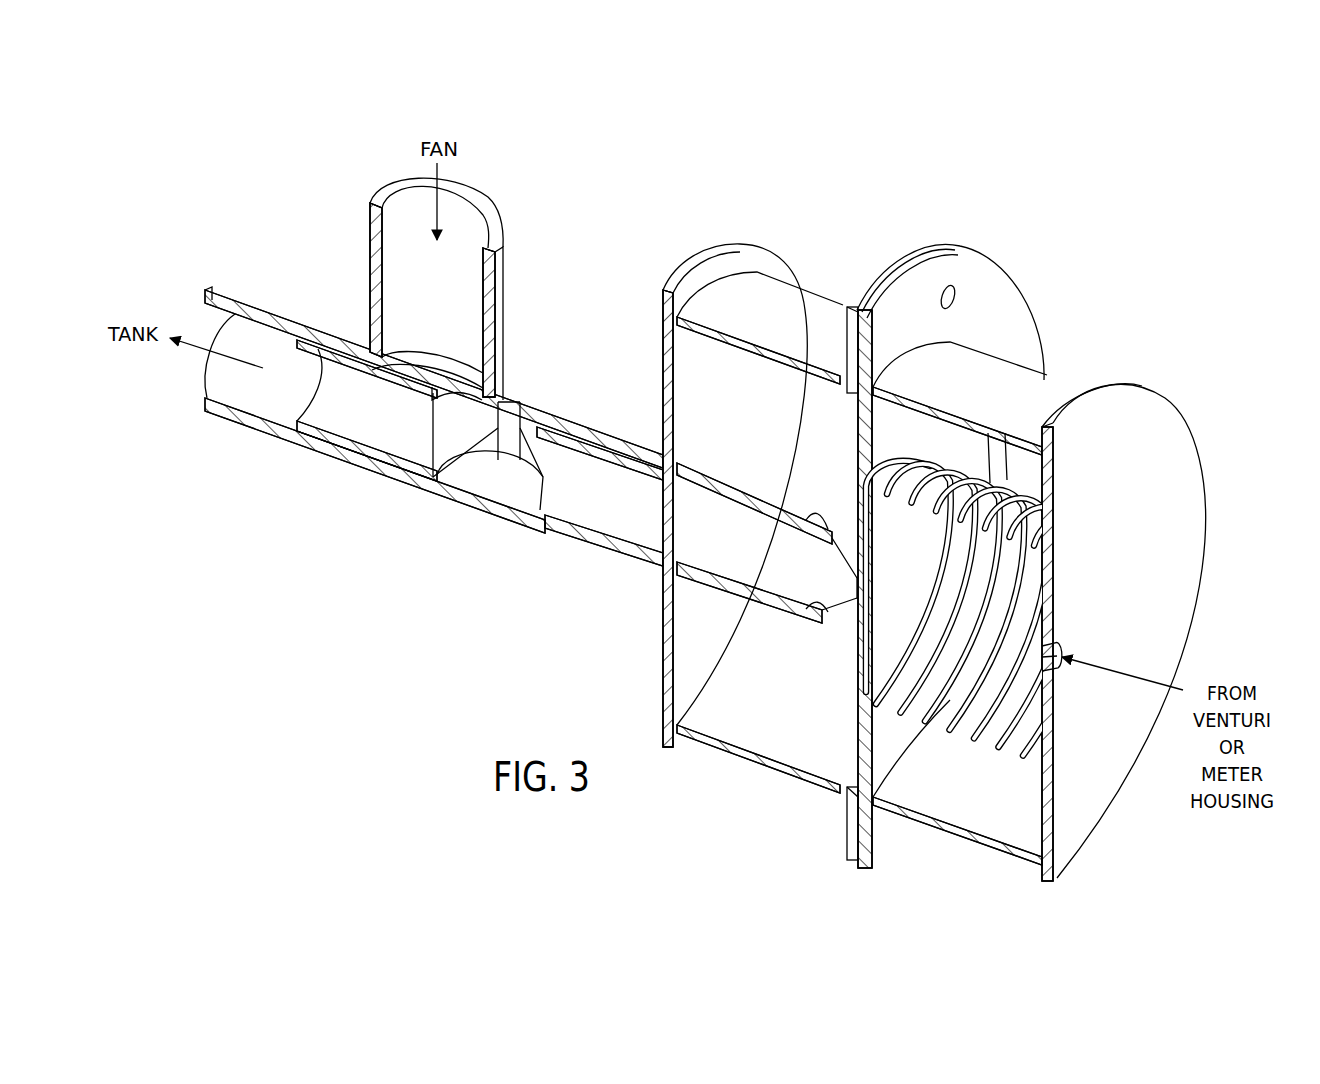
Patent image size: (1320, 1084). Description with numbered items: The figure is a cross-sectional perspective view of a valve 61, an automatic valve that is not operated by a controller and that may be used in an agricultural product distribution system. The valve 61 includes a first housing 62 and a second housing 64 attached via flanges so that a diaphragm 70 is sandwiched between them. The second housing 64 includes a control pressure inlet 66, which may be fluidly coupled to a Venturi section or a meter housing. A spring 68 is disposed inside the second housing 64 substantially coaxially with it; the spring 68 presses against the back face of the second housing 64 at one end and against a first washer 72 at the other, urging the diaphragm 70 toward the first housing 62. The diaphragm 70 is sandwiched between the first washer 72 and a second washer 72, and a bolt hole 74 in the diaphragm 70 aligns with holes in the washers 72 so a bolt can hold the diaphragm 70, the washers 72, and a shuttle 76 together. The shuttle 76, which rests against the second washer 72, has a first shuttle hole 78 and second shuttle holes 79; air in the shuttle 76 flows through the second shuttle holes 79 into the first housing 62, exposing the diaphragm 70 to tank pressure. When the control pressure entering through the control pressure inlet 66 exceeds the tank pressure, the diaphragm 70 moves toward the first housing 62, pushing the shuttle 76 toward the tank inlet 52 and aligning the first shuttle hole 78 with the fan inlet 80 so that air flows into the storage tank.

The tank inlet 52 is at (248, 422).
The valve 61 is at (653, 212).
The first housing 62 is at (798, 318).
The second housing 64 is at (1040, 397).
The control pressure inlet 66 is at (1058, 662).
The spring 68 is at (973, 737).
The diaphragm 70 is at (880, 720).
The washers 72 is at (875, 620).
The bolt hole 74 is at (848, 582).
The shuttle 76 is at (613, 510).
The first shuttle hole 78 is at (490, 480).
The second shuttle holes 79 is at (820, 518).
The fan inlet 80 is at (497, 317).